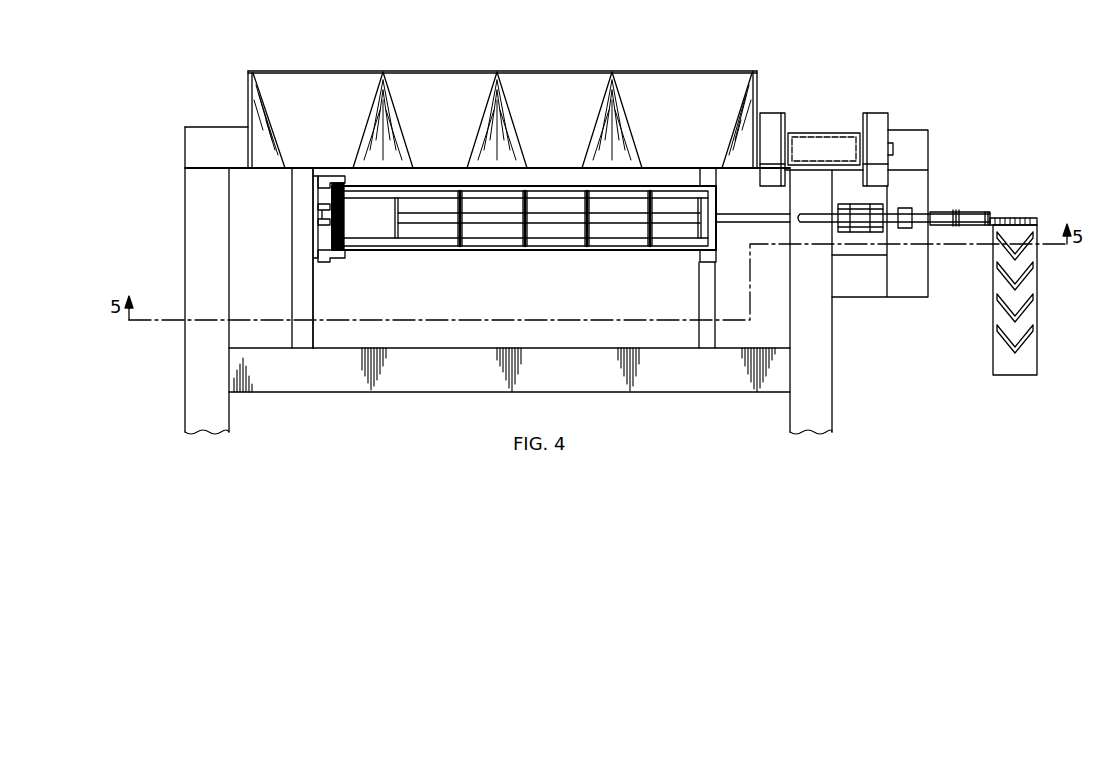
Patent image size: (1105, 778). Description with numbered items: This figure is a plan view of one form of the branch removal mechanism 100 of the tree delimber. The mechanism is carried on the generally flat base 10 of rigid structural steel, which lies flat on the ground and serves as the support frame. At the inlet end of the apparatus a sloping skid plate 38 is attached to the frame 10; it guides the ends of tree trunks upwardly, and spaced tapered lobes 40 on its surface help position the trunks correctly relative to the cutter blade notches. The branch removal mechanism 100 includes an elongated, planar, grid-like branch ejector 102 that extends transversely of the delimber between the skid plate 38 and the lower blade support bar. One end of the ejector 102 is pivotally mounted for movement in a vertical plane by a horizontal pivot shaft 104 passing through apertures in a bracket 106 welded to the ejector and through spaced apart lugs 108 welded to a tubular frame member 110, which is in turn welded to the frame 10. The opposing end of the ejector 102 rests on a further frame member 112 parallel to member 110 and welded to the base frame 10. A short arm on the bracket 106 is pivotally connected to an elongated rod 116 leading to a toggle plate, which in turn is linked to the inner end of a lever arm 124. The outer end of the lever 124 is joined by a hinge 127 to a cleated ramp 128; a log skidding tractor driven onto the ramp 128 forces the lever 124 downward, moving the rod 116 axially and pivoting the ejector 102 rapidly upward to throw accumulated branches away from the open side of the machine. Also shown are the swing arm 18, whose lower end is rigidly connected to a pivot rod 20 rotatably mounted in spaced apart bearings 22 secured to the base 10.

The base 10 is at (222, 286).
The swing arm 18 is at (826, 133).
The pivot rod 20 is at (893, 146).
The bearings 22 is at (786, 116).
The skid plate 38 is at (553, 86).
The tapered lobes 40 is at (481, 124).
The branch removal mechanism 100 is at (487, 245).
The branch ejector 102 is at (624, 251).
The pivot shaft 104 is at (337, 260).
The bracket 106 is at (355, 184).
The lugs 108 is at (321, 255).
The tubular frame member 110 is at (312, 250).
The frame member 112 is at (706, 283).
The rod 116 is at (735, 222).
The lever arm 124 is at (952, 217).
The hinge 127 is at (1035, 222).
The ramp 128 is at (1000, 323).